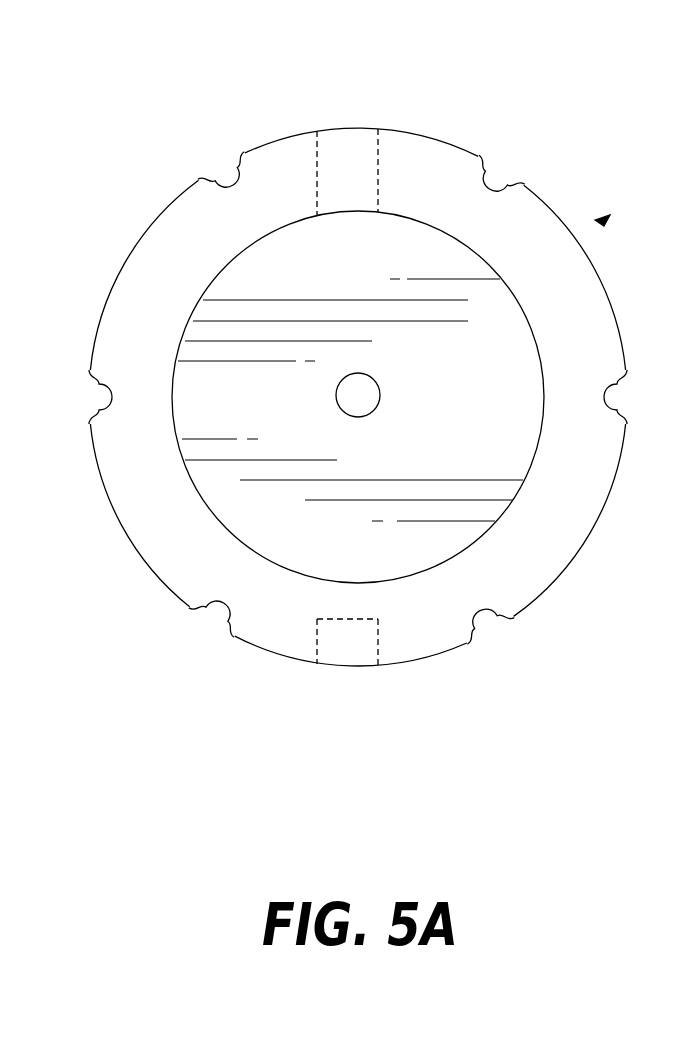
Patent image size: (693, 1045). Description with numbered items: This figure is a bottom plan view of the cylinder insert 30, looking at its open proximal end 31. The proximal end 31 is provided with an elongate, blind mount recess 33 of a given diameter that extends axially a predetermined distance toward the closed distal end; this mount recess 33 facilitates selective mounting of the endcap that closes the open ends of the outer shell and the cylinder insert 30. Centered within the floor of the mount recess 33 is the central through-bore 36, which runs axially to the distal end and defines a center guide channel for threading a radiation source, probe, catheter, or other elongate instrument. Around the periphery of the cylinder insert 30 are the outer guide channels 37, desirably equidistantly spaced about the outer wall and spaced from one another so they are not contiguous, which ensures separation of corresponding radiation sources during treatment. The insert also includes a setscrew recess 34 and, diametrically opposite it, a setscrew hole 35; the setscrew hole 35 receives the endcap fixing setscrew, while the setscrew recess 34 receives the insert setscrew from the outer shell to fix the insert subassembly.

The cylinder insert 30 is at (413, 131).
The proximal end 31 is at (598, 219).
The mount recess 33 is at (243, 541).
The setscrew recess 34 is at (339, 650).
The setscrew hole 35 is at (344, 158).
The central through-bore 36 is at (362, 393).
The outer guide channels 37 is at (233, 186).